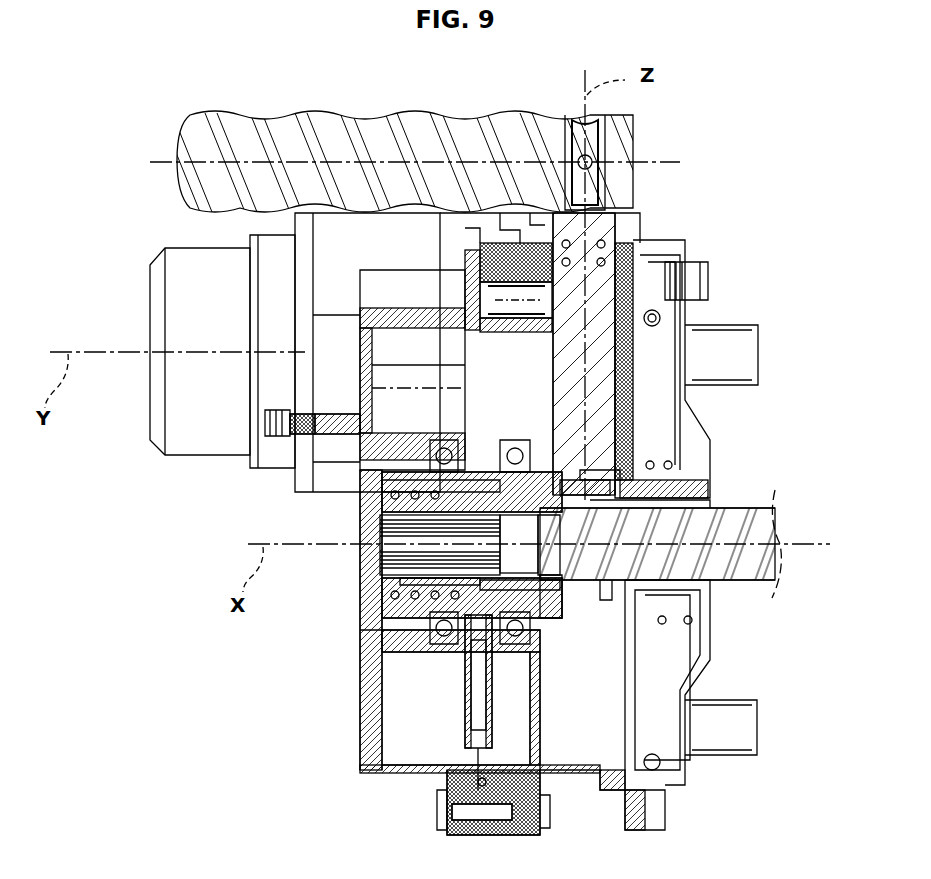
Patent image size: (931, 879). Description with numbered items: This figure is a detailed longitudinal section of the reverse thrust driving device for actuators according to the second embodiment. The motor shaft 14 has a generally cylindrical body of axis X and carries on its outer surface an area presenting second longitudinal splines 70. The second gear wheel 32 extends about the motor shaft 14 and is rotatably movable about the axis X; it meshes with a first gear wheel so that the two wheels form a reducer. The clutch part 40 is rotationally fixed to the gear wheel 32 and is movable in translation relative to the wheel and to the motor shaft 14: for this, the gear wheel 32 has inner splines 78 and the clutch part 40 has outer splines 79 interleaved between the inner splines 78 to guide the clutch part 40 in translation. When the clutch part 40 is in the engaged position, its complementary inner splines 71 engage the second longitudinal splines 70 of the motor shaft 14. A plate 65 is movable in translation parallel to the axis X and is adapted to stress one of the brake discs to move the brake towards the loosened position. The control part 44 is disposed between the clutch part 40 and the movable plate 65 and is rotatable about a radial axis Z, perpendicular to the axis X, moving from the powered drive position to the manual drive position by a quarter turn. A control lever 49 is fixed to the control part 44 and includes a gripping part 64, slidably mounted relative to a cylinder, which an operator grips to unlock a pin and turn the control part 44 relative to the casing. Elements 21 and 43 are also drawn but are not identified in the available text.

The control lever 49 is at (352, 140).
The gripping part 64 is at (437, 135).
The control part 44 is at (607, 318).
The outer splines 79 is at (548, 478).
The plate 65 is at (707, 452).
The inner splines 78 is at (500, 490).
The splined shaft 21 is at (400, 556).
The gear 43 is at (480, 578).
The second longitudinal splines 70 is at (500, 578).
The clutch part 40 is at (560, 583).
The inner splines 71 is at (548, 588).
The second gear wheel 32 is at (470, 737).
The motor shaft 14 is at (745, 575).